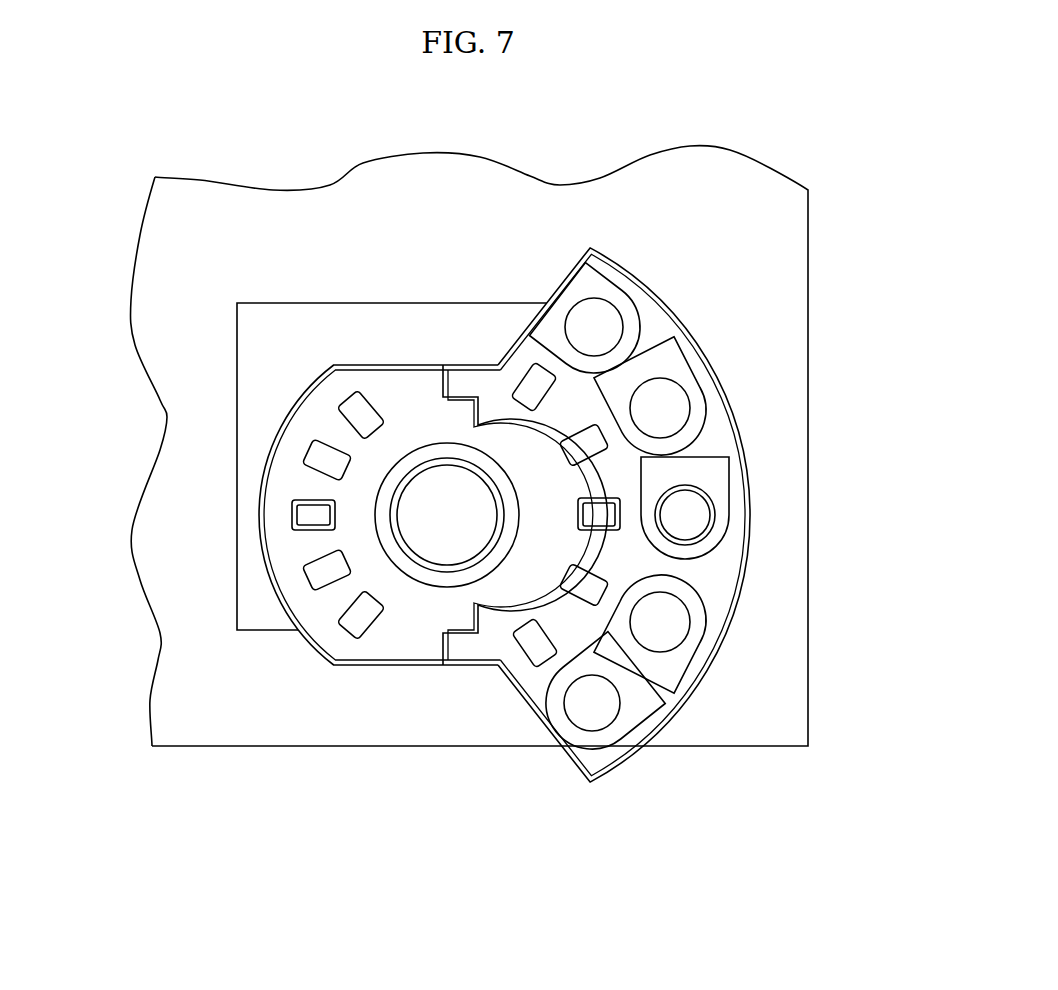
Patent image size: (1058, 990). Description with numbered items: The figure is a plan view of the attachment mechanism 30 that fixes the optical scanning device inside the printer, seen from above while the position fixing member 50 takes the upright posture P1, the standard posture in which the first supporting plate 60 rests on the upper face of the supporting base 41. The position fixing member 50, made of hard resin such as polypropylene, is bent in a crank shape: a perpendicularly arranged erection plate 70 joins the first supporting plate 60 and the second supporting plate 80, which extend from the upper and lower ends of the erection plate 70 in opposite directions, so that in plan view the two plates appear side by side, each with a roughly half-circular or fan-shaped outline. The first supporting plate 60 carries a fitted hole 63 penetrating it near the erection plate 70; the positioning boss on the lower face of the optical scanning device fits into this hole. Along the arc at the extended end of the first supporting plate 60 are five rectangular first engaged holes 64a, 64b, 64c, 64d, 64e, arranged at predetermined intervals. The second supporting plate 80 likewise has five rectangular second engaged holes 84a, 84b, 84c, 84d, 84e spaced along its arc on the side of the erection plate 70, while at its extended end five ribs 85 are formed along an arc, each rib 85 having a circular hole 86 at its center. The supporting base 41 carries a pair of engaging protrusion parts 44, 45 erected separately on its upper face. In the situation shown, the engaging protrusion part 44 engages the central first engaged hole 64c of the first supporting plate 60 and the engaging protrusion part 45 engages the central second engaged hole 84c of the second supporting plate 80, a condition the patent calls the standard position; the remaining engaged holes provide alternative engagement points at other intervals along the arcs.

The attachment mechanism 30 is at (386, 866).
The supporting base 41 is at (337, 735).
The engaging protrusion part 44 is at (312, 515).
The engaging protrusion part 45 is at (603, 515).
The position fixing member 50 is at (504, 556).
The first supporting plate 60 is at (412, 662).
The fitted hole 63 is at (458, 470).
The first engaged hole 64a is at (358, 413).
The first engaged hole 64b is at (317, 455).
The first engaged hole 64c is at (295, 528).
The first engaged hole 64d is at (322, 573).
The first engaged hole 64e is at (355, 613).
The erection plate 70 is at (457, 662).
The second supporting plate 80 is at (528, 698).
The second engaged hole 84a is at (538, 645).
The second engaged hole 84b is at (590, 584).
The second engaged hole 84c is at (622, 527).
The second engaged hole 84d is at (588, 445).
The second engaged hole 84e is at (536, 392).
The rib 85 is at (642, 705).
The circular hole 86 is at (580, 718).
The upright posture P1 is at (684, 262).